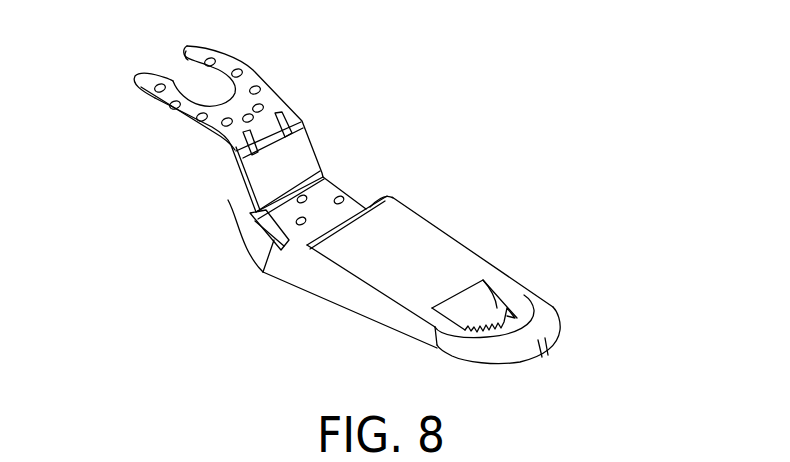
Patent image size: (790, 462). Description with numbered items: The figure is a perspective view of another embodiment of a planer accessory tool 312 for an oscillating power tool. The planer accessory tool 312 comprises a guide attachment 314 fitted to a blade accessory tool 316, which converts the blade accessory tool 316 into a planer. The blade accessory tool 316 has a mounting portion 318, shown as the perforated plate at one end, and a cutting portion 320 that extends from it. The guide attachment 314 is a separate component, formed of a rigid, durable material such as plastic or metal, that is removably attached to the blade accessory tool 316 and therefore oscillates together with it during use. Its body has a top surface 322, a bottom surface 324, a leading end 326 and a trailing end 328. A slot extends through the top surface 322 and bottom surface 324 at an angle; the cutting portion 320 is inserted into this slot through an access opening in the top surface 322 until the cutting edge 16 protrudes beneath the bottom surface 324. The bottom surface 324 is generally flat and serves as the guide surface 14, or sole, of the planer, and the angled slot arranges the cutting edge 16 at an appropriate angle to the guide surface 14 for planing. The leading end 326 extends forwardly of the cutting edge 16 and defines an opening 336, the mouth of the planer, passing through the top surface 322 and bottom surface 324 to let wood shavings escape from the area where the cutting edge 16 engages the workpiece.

The planer accessory tool 312 is at (565, 115).
The blade accessory tool 316 is at (277, 99).
The mounting portion 318 is at (163, 98).
The trailing end 328 is at (240, 212).
The cutting portion 320 is at (283, 236).
The guide attachment 314 is at (408, 261).
The top surface 322 is at (443, 253).
The bottom surface 324 is at (350, 321).
The guide surface 14 is at (378, 322).
The leading end 326 is at (528, 332).
The opening 336 is at (553, 309).
The cutting edge 16 is at (498, 306).